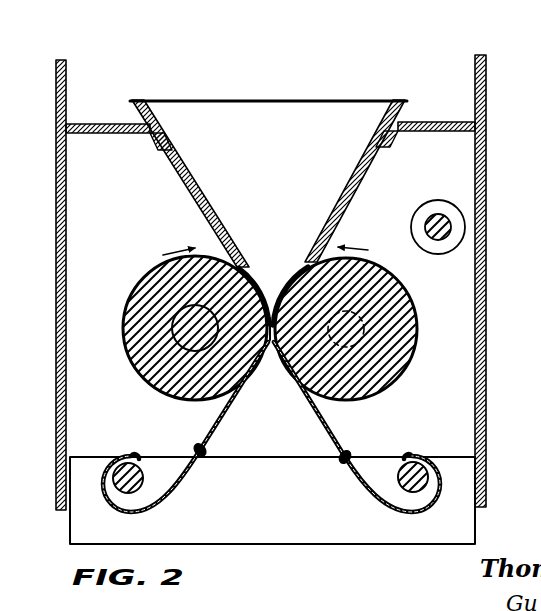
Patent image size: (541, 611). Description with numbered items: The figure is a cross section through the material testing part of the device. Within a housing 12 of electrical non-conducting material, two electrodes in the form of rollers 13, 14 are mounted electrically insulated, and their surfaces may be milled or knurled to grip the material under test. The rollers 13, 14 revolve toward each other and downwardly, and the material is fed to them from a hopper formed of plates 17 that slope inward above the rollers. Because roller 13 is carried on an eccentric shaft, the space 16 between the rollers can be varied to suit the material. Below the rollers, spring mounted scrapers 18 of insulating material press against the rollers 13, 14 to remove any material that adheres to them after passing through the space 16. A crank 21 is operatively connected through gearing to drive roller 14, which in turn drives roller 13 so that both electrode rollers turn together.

The housing 12 is at (486, 297).
The roller 13 is at (160, 388).
The roller 14 is at (398, 368).
The space between the rollers 16 is at (270, 345).
The plates 17 is at (335, 203).
The spring mounted scrapers 18 is at (221, 421).
The crank 21 is at (428, 217).